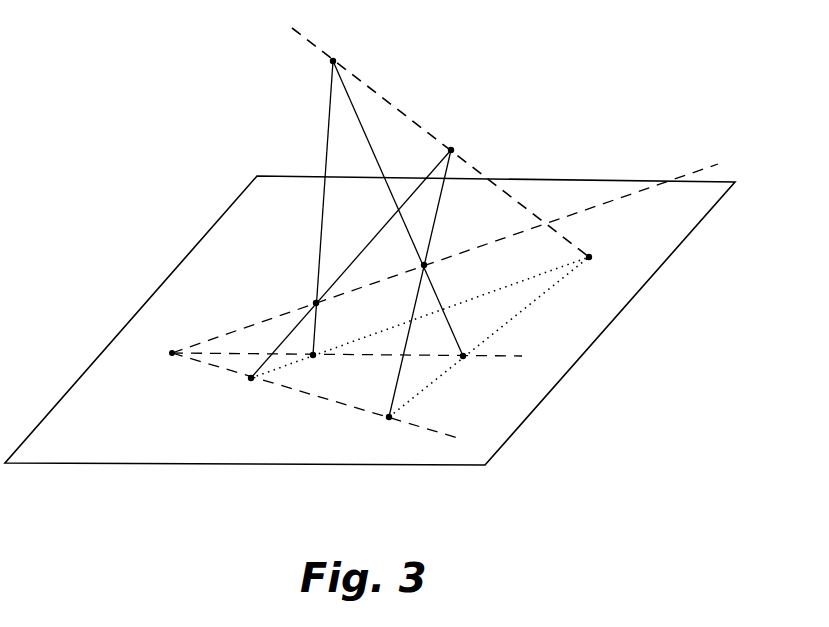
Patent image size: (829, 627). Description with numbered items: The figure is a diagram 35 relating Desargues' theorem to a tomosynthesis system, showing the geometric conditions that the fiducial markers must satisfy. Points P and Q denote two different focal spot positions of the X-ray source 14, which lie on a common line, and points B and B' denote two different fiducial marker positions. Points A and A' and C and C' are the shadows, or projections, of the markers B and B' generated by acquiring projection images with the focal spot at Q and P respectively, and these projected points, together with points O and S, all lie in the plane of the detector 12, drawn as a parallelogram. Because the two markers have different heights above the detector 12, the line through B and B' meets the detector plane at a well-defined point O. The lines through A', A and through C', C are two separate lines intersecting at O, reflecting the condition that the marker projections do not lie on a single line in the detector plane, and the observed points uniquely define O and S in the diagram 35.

The detector 12 is at (500, 408).
The X-ray source 14 is at (360, 43).
The diagram relating Desargues' Theorem to the tomosynthesis system 35 is at (596, 124).